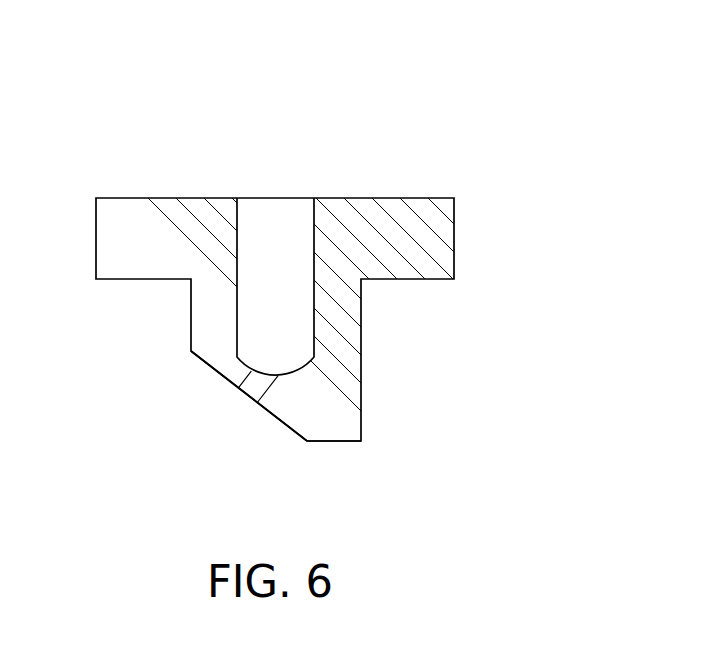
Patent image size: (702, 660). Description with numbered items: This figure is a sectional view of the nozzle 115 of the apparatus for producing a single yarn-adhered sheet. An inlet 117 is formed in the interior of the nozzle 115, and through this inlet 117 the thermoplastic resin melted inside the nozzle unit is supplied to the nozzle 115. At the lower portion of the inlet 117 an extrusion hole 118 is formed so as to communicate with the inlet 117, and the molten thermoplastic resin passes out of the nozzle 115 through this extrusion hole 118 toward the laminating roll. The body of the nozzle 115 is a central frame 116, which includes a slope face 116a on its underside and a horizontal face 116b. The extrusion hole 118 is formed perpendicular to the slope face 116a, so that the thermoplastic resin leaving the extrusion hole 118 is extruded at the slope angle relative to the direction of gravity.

The nozzle 115 is at (351, 330).
The central frame 116 is at (118, 204).
The slope face 116a is at (206, 361).
The horizontal face 116b is at (345, 443).
The inlet 117 is at (316, 215).
The extrusion hole 118 is at (258, 402).